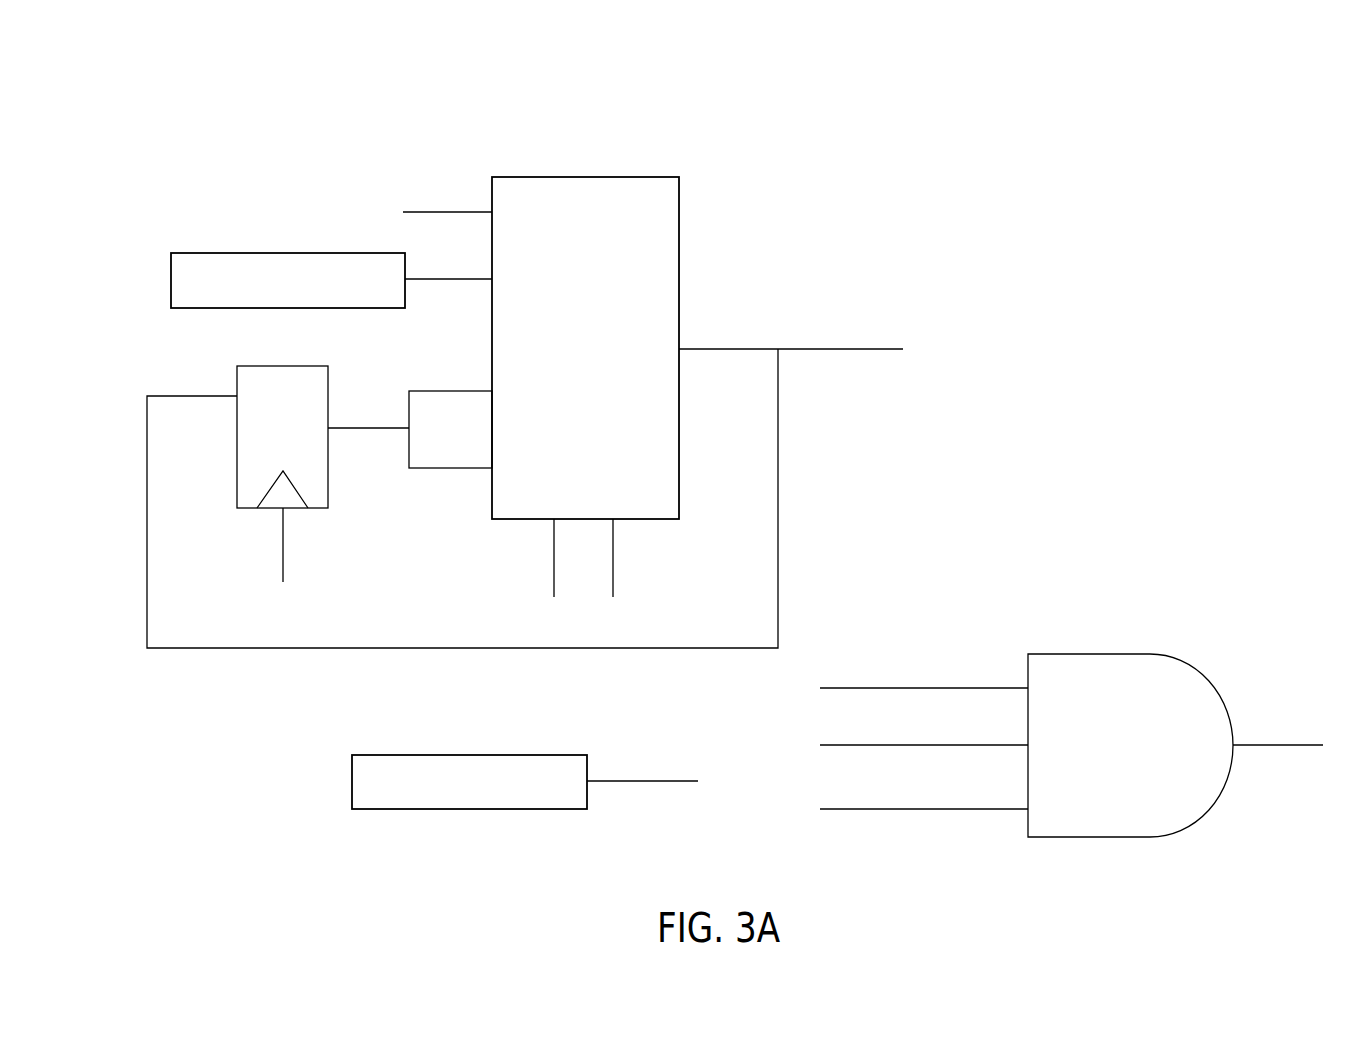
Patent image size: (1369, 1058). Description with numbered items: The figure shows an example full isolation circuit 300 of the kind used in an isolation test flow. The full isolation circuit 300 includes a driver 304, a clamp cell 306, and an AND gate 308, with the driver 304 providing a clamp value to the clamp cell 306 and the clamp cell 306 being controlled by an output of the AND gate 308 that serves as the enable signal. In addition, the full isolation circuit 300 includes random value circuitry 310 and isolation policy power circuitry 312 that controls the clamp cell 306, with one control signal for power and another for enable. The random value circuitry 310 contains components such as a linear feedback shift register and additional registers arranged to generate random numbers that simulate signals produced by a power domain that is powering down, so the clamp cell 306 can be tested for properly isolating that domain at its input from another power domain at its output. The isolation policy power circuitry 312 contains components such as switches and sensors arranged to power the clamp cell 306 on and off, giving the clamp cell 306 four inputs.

The full isolation circuit 300 is at (810, 83).
The driver 304 is at (327, 508).
The clamp cell 306 is at (586, 177).
The AND gate 308 is at (1108, 654).
The random value circuitry 310 is at (270, 253).
The isolation policy power circuitry 312 is at (451, 755).